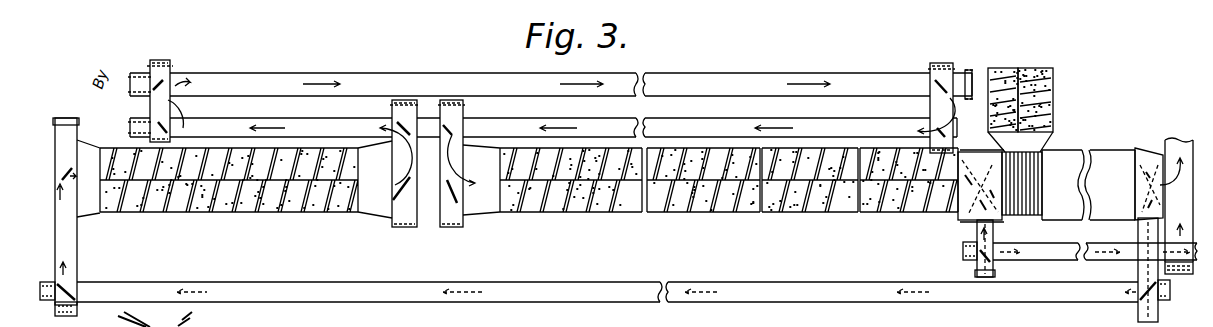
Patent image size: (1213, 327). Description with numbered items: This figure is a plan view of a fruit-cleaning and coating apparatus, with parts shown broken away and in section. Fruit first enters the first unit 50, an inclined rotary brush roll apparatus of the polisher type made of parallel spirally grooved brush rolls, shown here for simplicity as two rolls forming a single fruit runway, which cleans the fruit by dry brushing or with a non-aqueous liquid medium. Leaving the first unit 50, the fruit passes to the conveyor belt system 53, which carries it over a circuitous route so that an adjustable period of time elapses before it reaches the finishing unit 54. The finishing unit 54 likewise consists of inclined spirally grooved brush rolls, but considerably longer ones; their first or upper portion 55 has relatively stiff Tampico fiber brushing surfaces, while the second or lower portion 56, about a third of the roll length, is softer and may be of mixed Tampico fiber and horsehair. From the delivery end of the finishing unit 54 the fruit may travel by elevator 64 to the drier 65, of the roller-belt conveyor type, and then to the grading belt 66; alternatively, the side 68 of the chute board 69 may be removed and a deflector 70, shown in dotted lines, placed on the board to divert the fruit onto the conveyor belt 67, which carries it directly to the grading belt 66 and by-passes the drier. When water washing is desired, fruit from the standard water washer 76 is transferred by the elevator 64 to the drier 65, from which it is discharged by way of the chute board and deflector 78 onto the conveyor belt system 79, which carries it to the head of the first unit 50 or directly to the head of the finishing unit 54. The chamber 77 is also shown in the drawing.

The first unit 50 is at (234, 195).
The conveyor belt system 53 is at (358, 101).
The finishing unit 54 is at (752, 198).
The first or upper portion of the brush rolls 55 is at (665, 218).
The second or lower portion of the brush rolls 56 is at (880, 215).
The elevator 64 is at (1030, 172).
The drier 65 is at (1098, 158).
The grading belt 66 is at (1175, 141).
The conveyor belt 67 is at (977, 234).
The side of chute board 68 is at (960, 219).
The chute board 69 is at (975, 165).
The deflector 70 is at (1140, 300).
The water washer 76 is at (1035, 68).
The chamber 77 is at (1147, 165).
The chute board and deflector 78 is at (1138, 181).
The conveyor belt system 79 is at (112, 292).